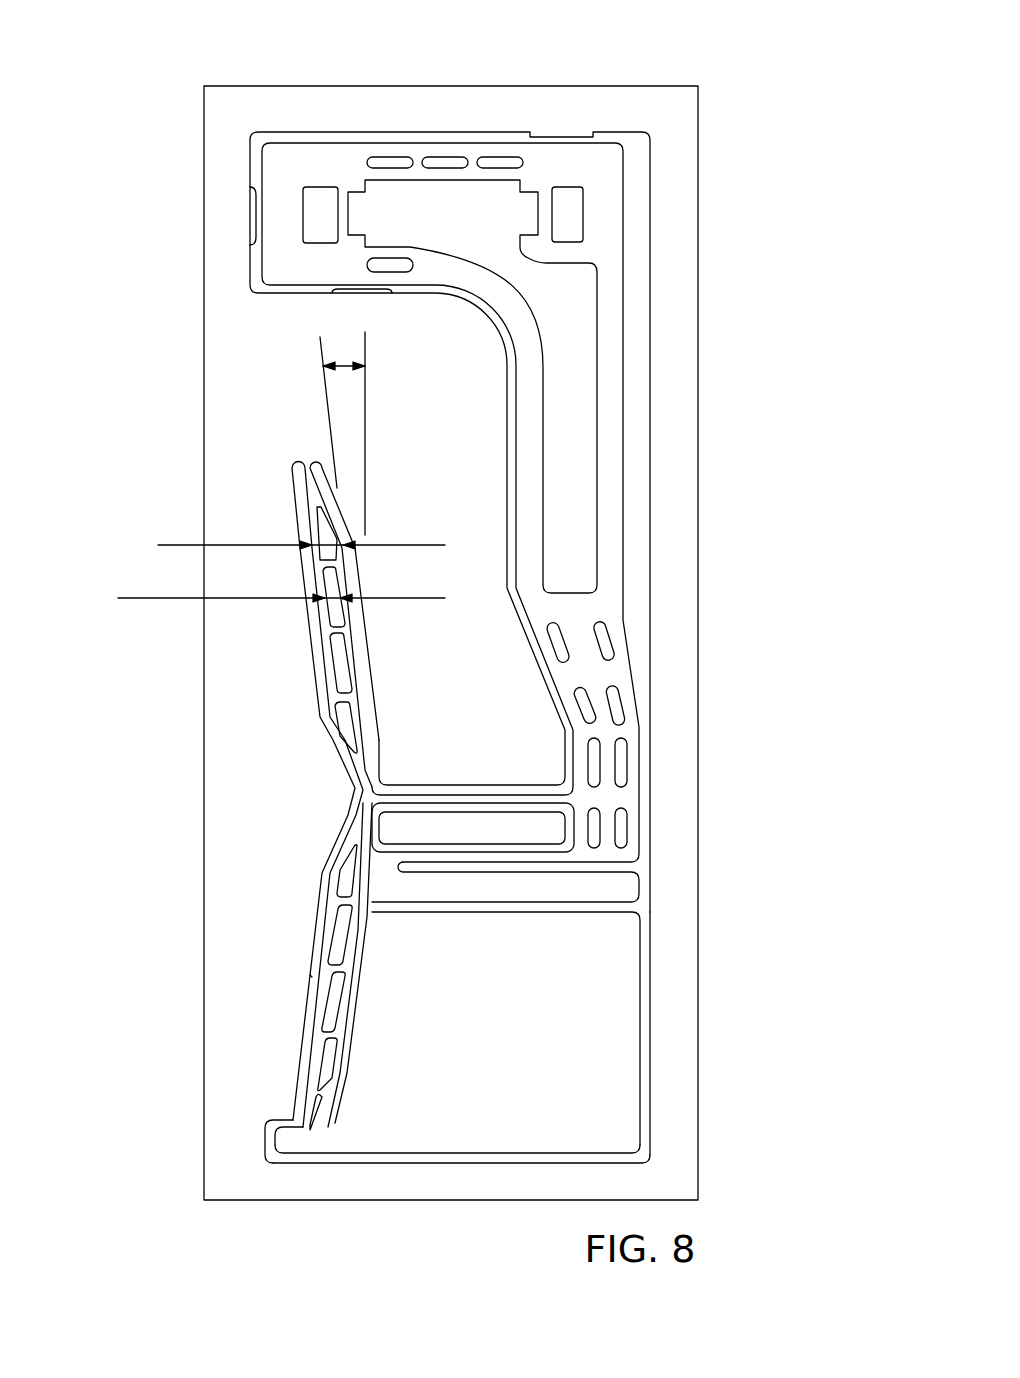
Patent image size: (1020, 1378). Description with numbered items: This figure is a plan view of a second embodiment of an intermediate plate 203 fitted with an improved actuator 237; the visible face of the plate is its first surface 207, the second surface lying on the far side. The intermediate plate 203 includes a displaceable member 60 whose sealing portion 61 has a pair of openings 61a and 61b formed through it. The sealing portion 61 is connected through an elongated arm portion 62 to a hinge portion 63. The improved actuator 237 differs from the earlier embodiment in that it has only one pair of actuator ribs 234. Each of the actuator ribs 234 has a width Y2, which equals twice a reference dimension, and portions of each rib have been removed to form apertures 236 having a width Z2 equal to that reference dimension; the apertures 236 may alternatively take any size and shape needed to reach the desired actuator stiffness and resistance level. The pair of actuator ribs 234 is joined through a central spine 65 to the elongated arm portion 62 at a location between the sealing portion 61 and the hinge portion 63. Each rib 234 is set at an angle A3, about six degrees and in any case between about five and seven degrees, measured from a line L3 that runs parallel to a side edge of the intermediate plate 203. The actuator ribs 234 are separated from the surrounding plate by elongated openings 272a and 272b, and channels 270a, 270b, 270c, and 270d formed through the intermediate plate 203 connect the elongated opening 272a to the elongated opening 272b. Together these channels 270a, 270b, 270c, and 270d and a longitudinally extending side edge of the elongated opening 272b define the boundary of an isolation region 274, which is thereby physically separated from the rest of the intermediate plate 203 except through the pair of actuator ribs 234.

The intermediate plate 203 is at (258, 86).
The displaceable member 60 is at (625, 441).
The sealing portion 61 is at (610, 158).
The opening 61a is at (312, 233).
The opening 61b is at (585, 230).
The elongated arm portion 62 is at (607, 497).
The hinge portion 63 is at (487, 858).
The central spine 65 is at (468, 787).
The first surface 207 is at (274, 338).
The actuator ribs 234 is at (305, 474).
The apertures 236 is at (340, 675).
The improved actuator 237 is at (267, 805).
The channel 270a is at (613, 903).
The channel 270b is at (645, 1003).
The channel 270c is at (462, 1163).
The channel 270d is at (267, 1152).
The elongated opening 272a is at (312, 977).
The elongated opening 272b is at (358, 1052).
The isolation region 274 is at (605, 1097).
The angle A3 is at (344, 366).
The line L3 is at (365, 447).
The width Y2 is at (170, 545).
The width Z2 is at (140, 598).